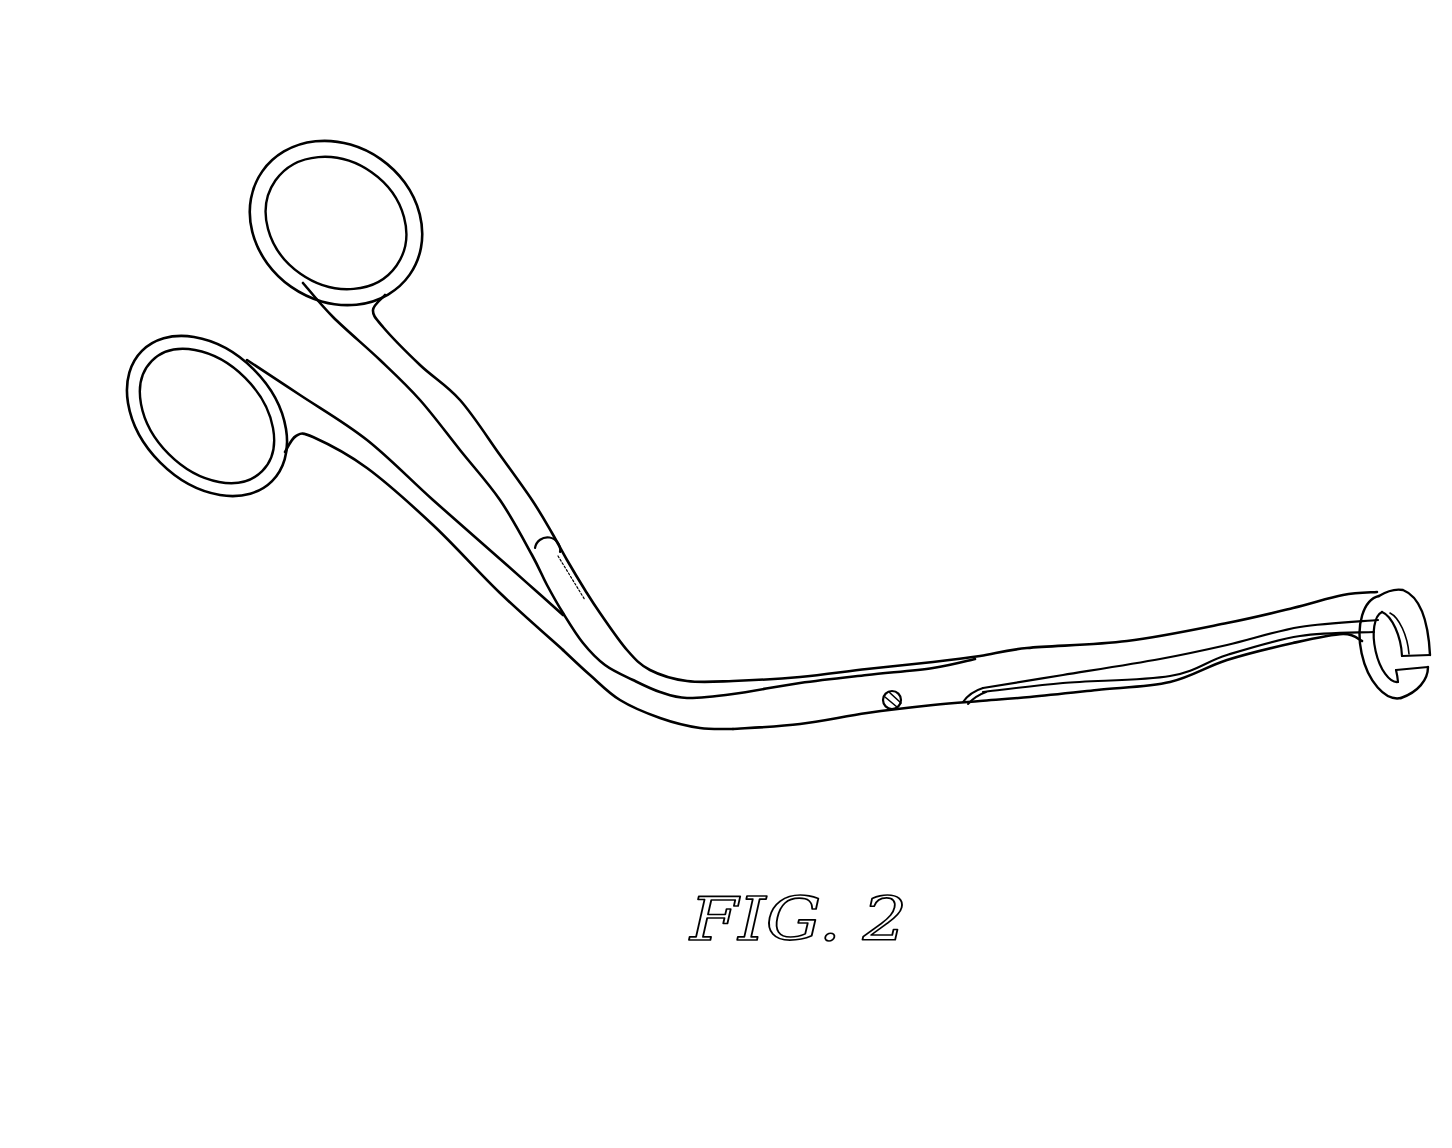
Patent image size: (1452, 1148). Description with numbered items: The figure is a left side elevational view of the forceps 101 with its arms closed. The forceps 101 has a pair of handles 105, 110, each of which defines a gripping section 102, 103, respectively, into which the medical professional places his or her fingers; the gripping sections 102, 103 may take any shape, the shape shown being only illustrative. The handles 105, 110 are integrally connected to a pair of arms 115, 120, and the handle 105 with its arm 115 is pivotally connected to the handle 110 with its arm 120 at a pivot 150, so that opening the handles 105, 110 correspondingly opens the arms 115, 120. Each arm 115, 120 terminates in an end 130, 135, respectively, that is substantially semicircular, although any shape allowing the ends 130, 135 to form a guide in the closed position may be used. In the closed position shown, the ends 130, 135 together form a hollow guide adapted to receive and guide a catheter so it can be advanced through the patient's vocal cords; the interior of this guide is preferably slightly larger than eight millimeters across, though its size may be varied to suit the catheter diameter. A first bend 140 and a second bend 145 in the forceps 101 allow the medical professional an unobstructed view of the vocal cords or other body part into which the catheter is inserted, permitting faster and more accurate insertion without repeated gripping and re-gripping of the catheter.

The forceps 101 is at (864, 240).
The gripping section 102 is at (322, 200).
The gripping section 103 is at (193, 423).
The handle 105 is at (373, 165).
The handle 110 is at (180, 345).
The arm 115 is at (1008, 703).
The arm 120 is at (1138, 655).
The end 130 is at (1413, 683).
The end 135 is at (1410, 628).
The first bend 140 is at (555, 562).
The second bend 145 is at (615, 708).
The pivot 150 is at (888, 690).